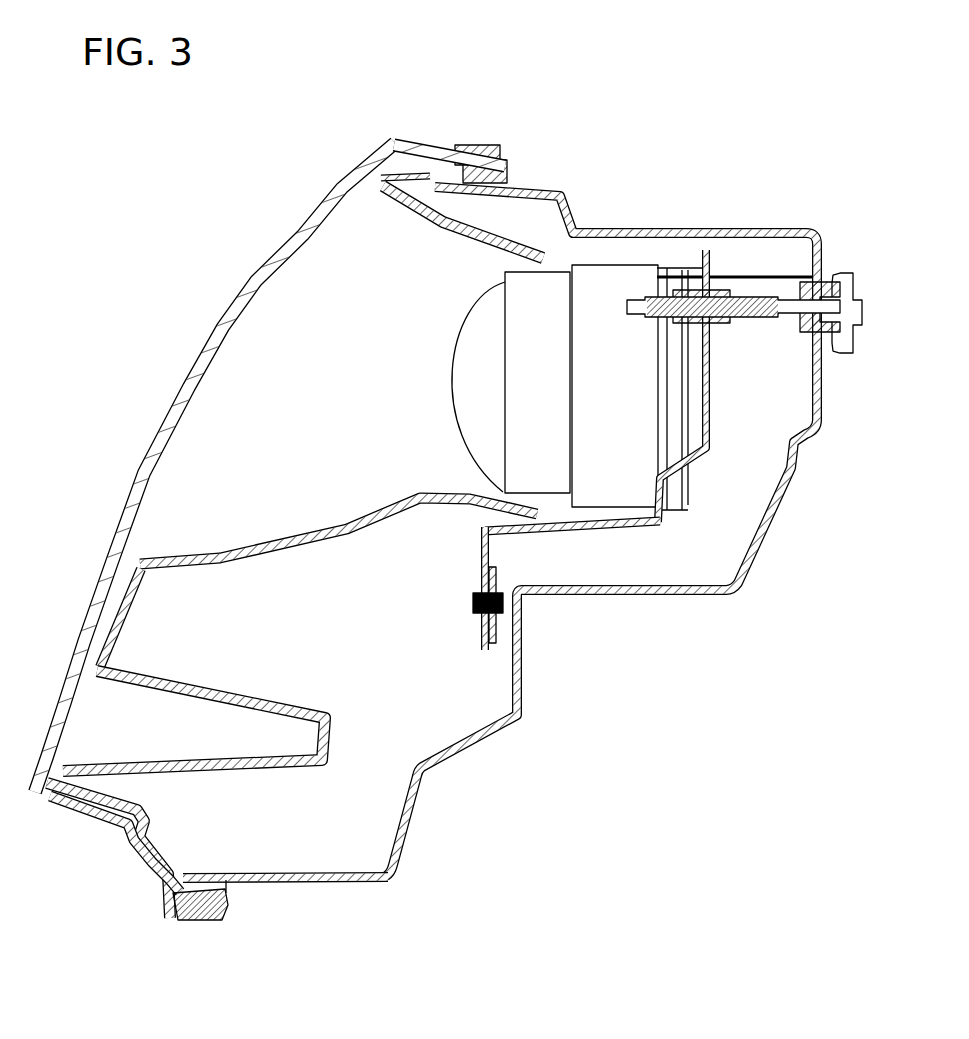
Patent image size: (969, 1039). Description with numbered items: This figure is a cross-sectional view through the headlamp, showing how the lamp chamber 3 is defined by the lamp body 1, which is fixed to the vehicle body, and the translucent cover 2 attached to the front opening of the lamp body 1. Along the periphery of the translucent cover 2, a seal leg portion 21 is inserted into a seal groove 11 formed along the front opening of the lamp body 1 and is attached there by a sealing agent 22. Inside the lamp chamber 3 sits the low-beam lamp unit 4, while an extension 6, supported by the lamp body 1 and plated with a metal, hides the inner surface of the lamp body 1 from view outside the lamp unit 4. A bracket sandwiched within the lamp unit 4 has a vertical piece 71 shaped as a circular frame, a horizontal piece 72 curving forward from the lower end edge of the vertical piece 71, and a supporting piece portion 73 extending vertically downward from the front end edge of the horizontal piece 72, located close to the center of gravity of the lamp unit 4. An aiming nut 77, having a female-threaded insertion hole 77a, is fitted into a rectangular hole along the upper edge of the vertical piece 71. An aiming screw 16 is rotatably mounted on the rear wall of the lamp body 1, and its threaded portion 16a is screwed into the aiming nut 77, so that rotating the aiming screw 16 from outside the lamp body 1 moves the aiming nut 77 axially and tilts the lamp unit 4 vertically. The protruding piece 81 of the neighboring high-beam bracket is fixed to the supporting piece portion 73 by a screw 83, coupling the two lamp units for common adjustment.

The lamp body 1 is at (500, 559).
The translucent cover 2 is at (243, 290).
The lamp chamber 3 is at (305, 852).
The lamp unit 4 is at (628, 290).
The extension 6 is at (273, 553).
The seal groove 11 is at (223, 922).
The aiming screw 16 is at (826, 328).
The threaded portion 16a is at (750, 297).
The seal leg portion 21 is at (165, 920).
The sealing agent 22 is at (198, 926).
The vertical piece 71 is at (693, 460).
The horizontal piece 72 is at (610, 527).
The supporting piece portion 73 is at (481, 560).
The aiming nut 77 is at (747, 362).
The insertion hole 77a is at (741, 314).
The protruding piece 81 is at (497, 643).
The screw 83 is at (480, 612).